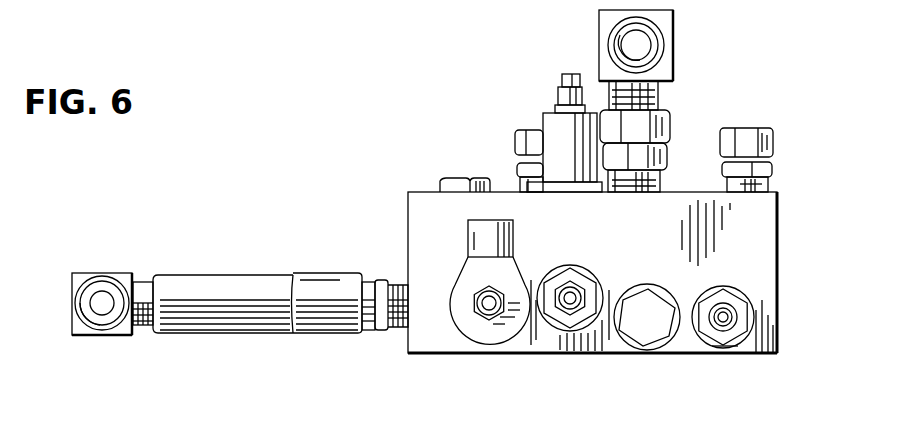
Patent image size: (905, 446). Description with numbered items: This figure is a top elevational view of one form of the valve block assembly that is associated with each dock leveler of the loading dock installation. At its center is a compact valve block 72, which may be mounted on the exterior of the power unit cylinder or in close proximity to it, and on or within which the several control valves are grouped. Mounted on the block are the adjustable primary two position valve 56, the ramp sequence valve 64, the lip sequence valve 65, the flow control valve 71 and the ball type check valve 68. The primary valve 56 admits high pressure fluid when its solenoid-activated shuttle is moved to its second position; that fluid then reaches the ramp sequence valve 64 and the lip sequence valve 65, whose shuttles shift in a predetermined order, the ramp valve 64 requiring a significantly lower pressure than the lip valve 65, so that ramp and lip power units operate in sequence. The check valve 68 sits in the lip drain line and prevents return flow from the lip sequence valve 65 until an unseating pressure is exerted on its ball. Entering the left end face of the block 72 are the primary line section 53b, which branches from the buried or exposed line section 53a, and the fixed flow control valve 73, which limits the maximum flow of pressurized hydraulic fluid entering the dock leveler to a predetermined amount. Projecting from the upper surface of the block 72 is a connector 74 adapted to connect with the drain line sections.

The line section 53a is at (100, 283).
The line section 53b is at (147, 280).
The primary two position valve 56 is at (480, 328).
The ramp sequence valve 64 is at (572, 266).
The lip sequence valve 65 is at (725, 285).
The check valve 68 is at (621, 318).
The flow control valve 71 is at (560, 128).
The valve block 72 is at (417, 198).
The fixed flow control valve 73 is at (247, 273).
The connector 74 is at (645, 51).